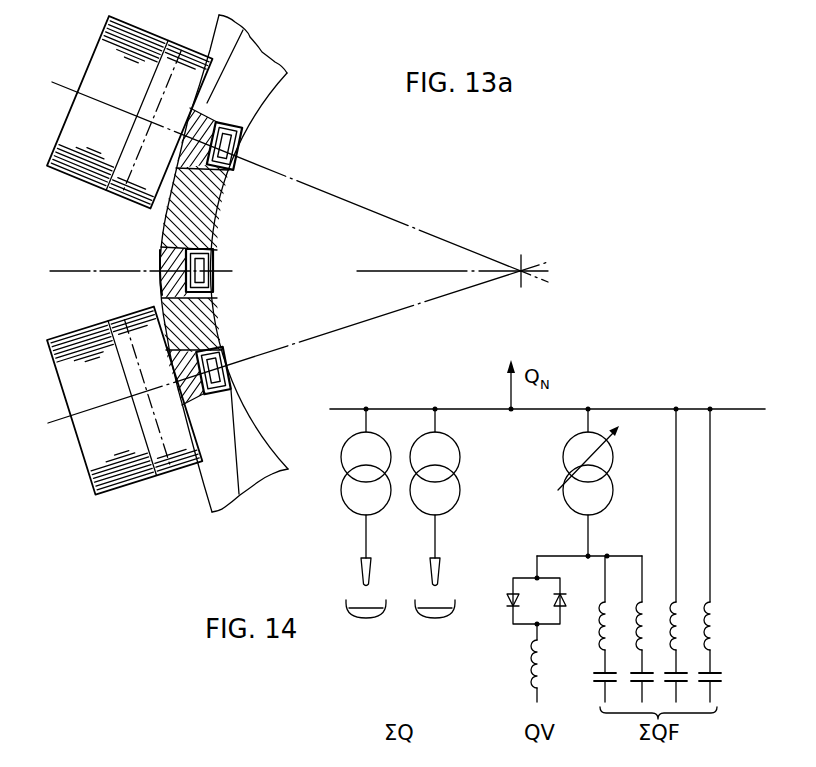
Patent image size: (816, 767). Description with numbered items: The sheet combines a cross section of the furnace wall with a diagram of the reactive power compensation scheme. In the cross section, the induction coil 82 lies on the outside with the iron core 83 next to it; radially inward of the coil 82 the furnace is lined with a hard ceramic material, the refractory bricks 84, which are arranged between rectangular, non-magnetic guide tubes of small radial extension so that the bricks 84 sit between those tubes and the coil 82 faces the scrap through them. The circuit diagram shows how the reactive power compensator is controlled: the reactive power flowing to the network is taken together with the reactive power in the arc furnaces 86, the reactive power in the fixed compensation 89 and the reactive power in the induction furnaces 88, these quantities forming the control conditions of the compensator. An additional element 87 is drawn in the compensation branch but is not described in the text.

In FIG. 13A, the coil 82 is at (231, 175).
In FIG. 13A, the iron core 83 is at (88, 62).
In FIG. 13A, the refractory bricks 84 is at (215, 330).
In FIG. 14, the arc furnaces 86 is at (462, 630).
In FIG. 14, the reactor coil of thyristor branch 87 is at (525, 657).
In FIG. 13A, the induction furnaces 88 is at (162, 257).
In FIG. 14, the induction furnaces 88 is at (724, 589).
In FIG. 14, the fixed compensation 89 is at (651, 574).